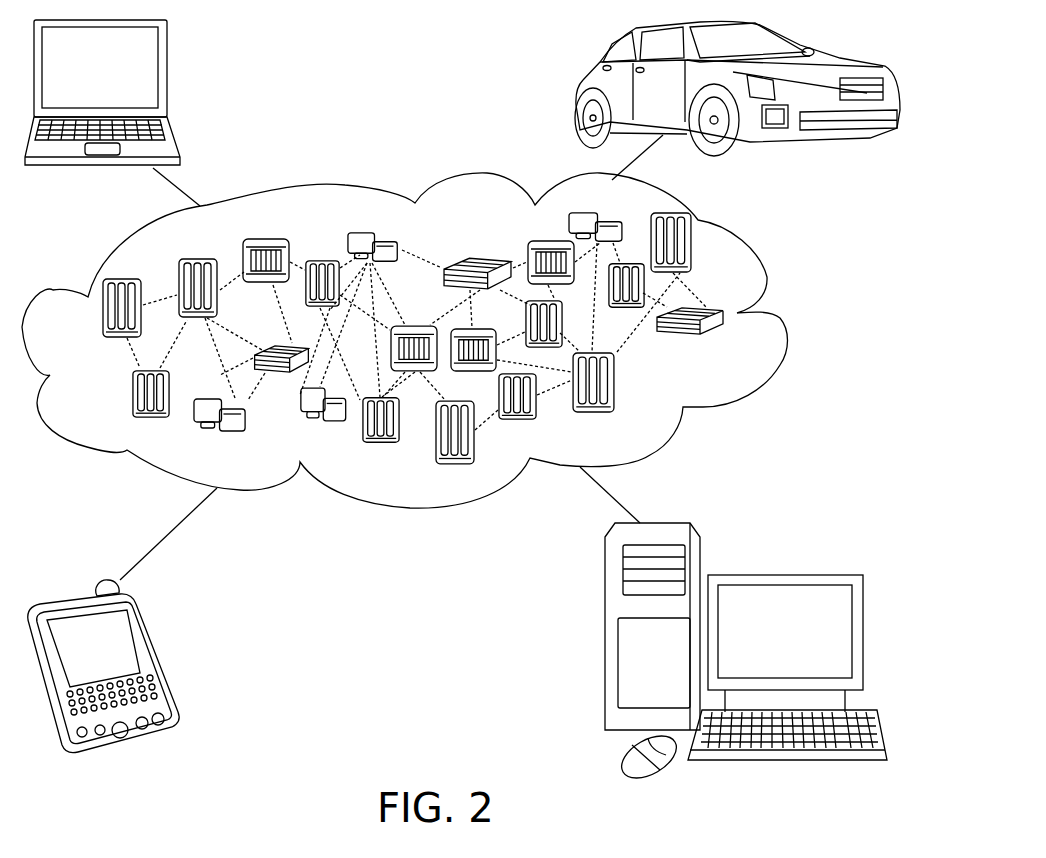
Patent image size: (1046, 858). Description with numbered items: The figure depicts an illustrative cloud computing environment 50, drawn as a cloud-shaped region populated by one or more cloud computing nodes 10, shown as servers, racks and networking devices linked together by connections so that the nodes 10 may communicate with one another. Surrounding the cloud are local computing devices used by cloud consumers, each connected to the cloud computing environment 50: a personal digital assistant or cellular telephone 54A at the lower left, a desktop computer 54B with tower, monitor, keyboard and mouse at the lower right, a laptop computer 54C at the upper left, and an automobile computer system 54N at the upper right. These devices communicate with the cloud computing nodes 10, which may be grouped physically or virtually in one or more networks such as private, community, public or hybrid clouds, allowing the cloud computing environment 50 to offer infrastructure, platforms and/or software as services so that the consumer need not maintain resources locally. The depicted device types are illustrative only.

The cloud computing nodes 10 is at (728, 347).
The cloud computing environment 50 is at (405, 340).
The personal digital assistant or cellular telephone 54A is at (158, 660).
The desktop computer 54B is at (780, 575).
The laptop computer 54C is at (168, 74).
The automobile computer system 54N is at (580, 93).